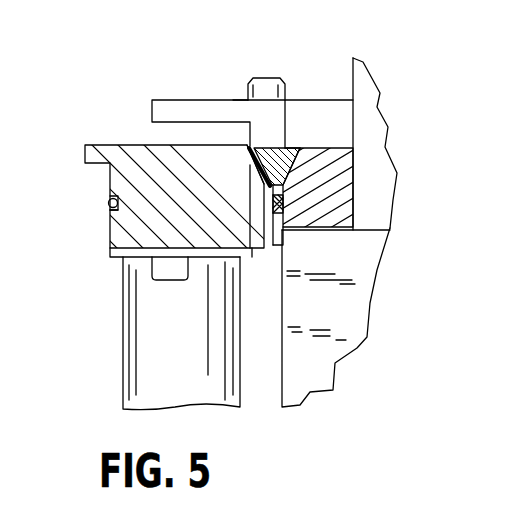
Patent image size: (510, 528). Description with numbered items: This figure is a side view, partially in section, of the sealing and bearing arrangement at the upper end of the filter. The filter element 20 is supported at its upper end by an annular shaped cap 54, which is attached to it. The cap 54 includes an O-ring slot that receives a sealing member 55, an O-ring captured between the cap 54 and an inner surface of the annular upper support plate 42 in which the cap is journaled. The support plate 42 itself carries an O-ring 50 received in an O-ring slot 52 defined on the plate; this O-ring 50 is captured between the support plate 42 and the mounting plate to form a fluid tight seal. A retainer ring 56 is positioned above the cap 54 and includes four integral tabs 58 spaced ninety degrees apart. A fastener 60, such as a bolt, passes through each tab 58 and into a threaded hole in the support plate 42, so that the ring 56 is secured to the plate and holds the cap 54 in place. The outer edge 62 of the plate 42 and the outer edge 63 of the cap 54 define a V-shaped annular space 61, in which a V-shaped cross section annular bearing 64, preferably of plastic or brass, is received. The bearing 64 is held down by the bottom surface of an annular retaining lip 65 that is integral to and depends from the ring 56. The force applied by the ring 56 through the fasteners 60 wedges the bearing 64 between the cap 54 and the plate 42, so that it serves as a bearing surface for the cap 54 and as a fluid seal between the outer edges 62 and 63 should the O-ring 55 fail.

The filter element 20 is at (365, 300).
The upper support plate 42 is at (117, 144).
The O-ring 50 is at (108, 203).
The O-ring slot 52 is at (107, 212).
The cap 54 is at (300, 221).
The sealing member 55 is at (283, 203).
The retainer ring 56 is at (215, 100).
The tab 58 is at (234, 99).
The fastener 60 is at (279, 80).
The V-shaped annular space 61 is at (312, 161).
The outer edge of the plate 62 is at (250, 166).
The outer edge of the cap 63 is at (288, 180).
The annular bearing 64 is at (290, 148).
The retaining lip 65 is at (262, 157).